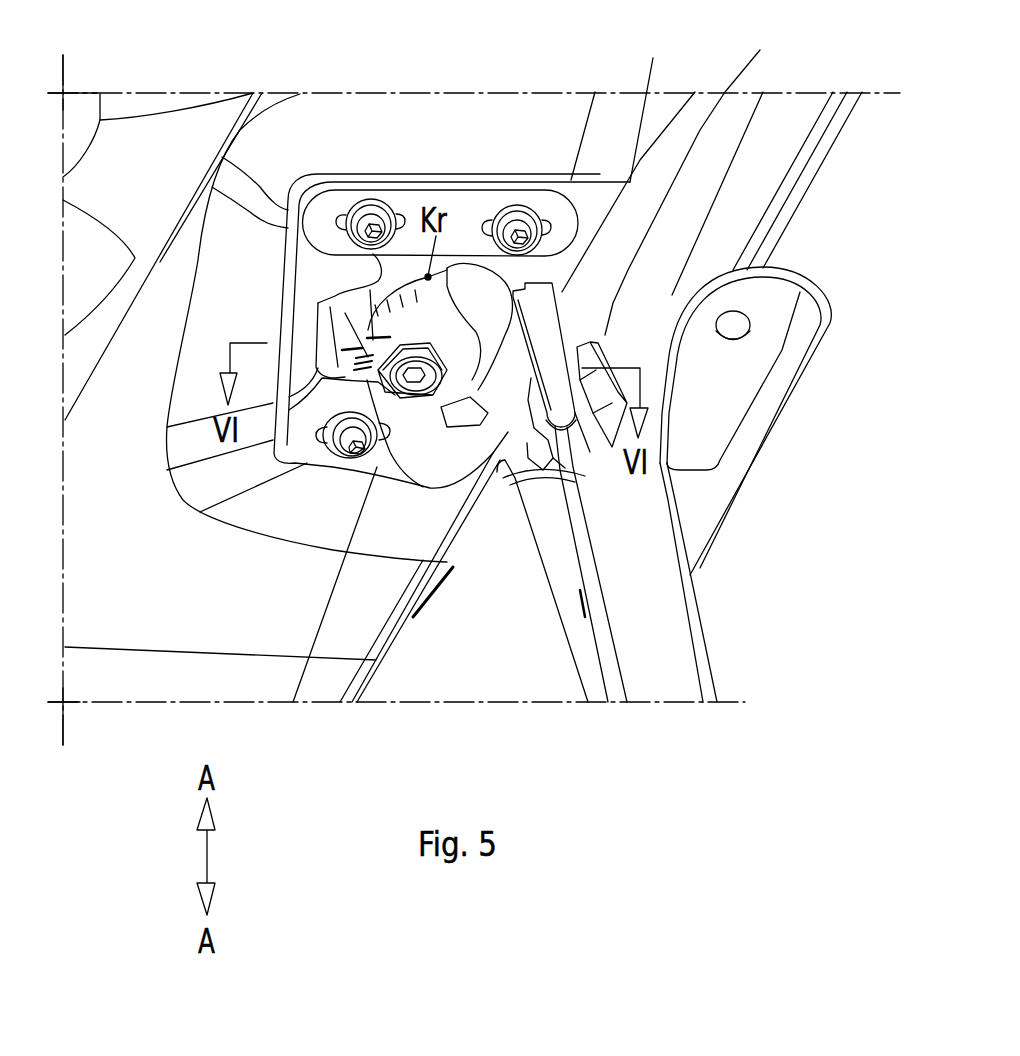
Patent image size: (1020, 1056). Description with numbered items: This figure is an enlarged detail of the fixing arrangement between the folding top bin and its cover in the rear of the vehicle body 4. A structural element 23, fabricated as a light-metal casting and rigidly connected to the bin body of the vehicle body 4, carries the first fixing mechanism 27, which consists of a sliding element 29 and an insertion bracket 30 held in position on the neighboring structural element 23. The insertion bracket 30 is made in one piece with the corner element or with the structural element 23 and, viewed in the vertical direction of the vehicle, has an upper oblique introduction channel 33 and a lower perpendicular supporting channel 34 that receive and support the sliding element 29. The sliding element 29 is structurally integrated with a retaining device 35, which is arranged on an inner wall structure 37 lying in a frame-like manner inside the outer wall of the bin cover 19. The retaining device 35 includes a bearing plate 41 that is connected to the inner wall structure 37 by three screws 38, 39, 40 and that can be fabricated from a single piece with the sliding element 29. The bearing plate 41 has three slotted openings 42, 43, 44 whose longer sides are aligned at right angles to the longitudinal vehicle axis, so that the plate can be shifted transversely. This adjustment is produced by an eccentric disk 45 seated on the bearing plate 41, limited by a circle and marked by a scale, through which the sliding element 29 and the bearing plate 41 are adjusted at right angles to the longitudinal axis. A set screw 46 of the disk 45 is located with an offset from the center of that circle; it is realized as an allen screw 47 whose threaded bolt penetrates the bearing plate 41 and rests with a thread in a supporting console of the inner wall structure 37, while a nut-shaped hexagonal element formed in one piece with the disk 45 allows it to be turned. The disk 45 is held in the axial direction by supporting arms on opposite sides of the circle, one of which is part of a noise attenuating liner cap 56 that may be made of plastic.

The vehicle body 4 is at (823, 289).
The bin cover 19 is at (818, 137).
The structural element 23 is at (707, 637).
The first fixing mechanism 27 is at (568, 287).
The sliding element 29 is at (577, 453).
The insertion bracket 30 is at (600, 358).
The upper oblique introduction channel 33 is at (580, 363).
The lower perpendicular supporting channel 34 is at (587, 435).
The retaining device 35 is at (443, 187).
The inner wall structure 37 is at (607, 148).
The screw 38 is at (370, 220).
The screw 39 is at (517, 221).
The screw 40 is at (344, 433).
The bearing plate 41 is at (387, 449).
The slotted opening 42 is at (339, 221).
The slotted opening 43 is at (543, 221).
The slotted opening 44 is at (321, 434).
The eccentric disk 45 is at (369, 378).
The set screw 46 is at (415, 370).
The allen screw 47 is at (430, 362).
The noise attenuating liner cap 56 is at (542, 342).